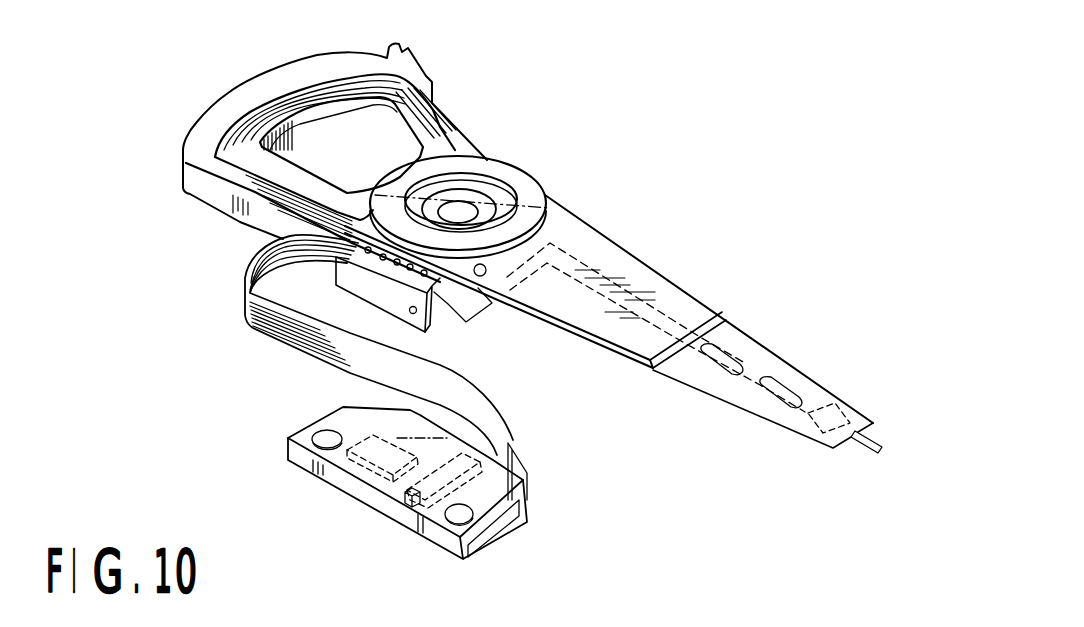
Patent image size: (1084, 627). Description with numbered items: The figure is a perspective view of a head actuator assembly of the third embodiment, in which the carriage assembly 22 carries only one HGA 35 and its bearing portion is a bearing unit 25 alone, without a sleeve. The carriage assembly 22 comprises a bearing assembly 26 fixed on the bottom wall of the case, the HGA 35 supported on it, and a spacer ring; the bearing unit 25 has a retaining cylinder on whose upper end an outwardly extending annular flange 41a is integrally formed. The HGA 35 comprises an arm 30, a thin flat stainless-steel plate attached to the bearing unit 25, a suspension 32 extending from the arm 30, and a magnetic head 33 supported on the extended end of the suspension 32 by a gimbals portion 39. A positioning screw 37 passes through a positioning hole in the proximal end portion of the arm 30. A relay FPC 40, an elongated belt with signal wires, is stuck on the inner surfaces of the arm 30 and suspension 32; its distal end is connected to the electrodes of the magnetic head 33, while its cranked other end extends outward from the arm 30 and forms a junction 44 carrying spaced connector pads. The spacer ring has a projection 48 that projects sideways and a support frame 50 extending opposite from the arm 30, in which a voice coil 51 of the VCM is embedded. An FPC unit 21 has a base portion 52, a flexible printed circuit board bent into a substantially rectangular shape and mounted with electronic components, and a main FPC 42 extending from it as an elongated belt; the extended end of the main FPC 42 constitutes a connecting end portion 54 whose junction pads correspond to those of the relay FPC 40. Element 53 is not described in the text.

The FPC unit 21 is at (293, 494).
The carriage assembly 22 is at (650, 190).
The bearing unit 25 is at (488, 193).
The bearing assembly 26 is at (496, 139).
The arm 30 is at (647, 273).
The suspension 32 is at (767, 360).
The magnetic head 33 is at (838, 402).
The HGA 35 is at (633, 375).
The positioning screw 37 is at (487, 275).
The gimbals portion 39 is at (805, 440).
The relay FPC 40 is at (698, 302).
The annular flange 41a is at (527, 193).
The main FPC 42 is at (247, 317).
The junction 44 is at (368, 263).
The projection 48 is at (437, 317).
The support frame 50 is at (202, 190).
The voice coil 51 is at (277, 107).
The base portion 52 is at (442, 540).
The circuit component (hidden) 53 is at (408, 498).
The connecting end portion 54 is at (388, 298).